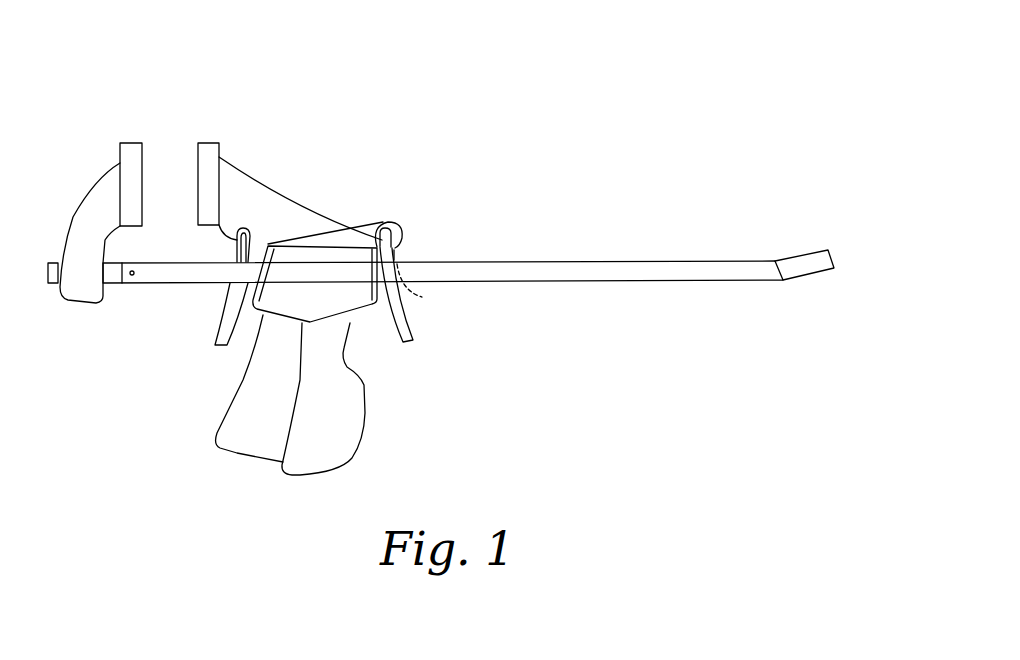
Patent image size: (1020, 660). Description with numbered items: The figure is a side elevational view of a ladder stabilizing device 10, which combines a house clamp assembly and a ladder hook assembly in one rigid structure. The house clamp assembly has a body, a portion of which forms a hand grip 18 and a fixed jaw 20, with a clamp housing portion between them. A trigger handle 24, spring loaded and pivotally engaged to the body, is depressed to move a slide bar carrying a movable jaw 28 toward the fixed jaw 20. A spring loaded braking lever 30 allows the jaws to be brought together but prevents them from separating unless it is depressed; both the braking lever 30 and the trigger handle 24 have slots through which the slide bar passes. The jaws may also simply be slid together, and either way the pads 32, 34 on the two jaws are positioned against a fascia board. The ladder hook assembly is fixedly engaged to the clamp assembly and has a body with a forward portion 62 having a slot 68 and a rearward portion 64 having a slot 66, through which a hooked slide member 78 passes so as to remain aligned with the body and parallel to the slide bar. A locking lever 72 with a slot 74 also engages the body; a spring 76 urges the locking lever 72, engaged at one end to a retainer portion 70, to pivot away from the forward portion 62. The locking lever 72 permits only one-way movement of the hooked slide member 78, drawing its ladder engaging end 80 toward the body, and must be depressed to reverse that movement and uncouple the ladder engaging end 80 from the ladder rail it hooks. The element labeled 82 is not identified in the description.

The ladder stabilizing device 10 is at (450, 193).
The hand grip 18 is at (336, 432).
The fixed jaw 20 is at (218, 203).
The trigger handle 24 is at (283, 420).
The movable jaw 28 is at (82, 202).
The braking lever 30 is at (222, 325).
The pad 32 is at (205, 143).
The pad 34 is at (140, 148).
The forward portion 62 is at (361, 297).
The rearward portion 64 is at (268, 318).
The slot 66 is at (251, 247).
The slot 68 is at (400, 258).
The retainer portion 70 is at (385, 220).
The locking lever 72 is at (408, 325).
The slot 74 is at (423, 287).
The spring 76 is at (370, 243).
The hooked slide member 78 is at (623, 261).
The ladder engaging end 80 is at (802, 260).
The bar end 82 is at (157, 284).